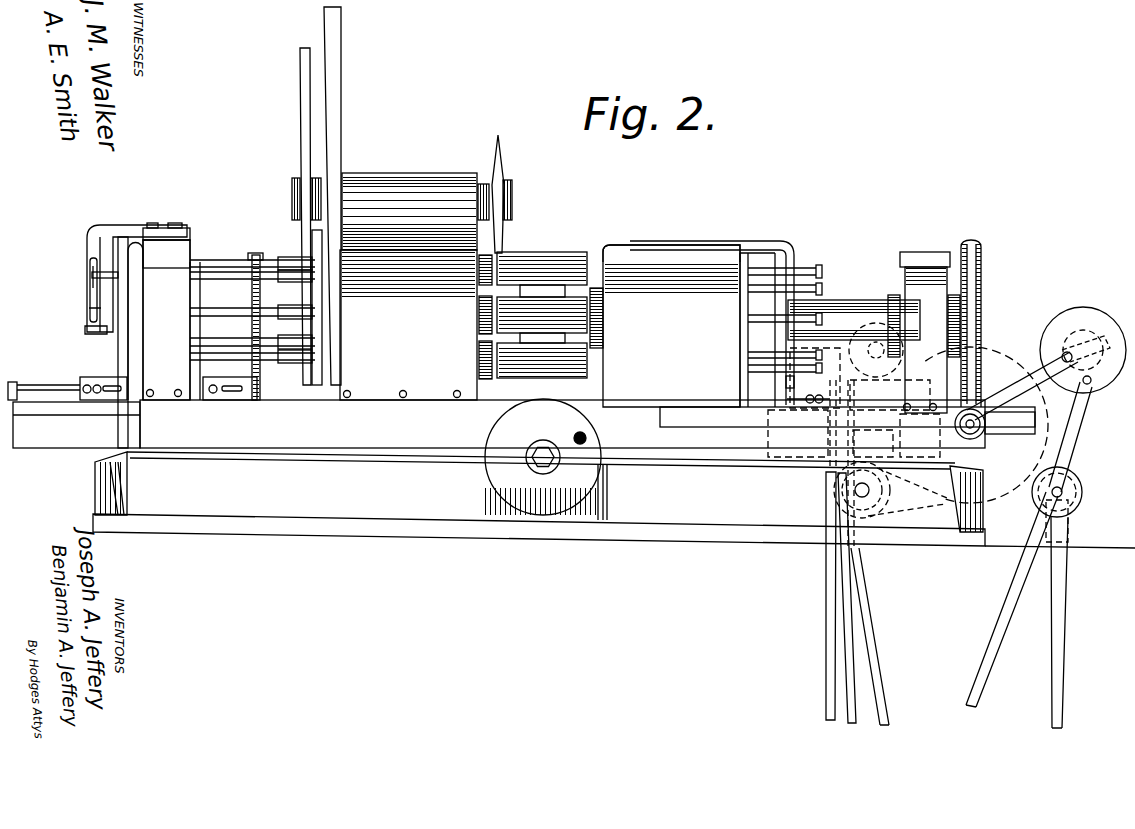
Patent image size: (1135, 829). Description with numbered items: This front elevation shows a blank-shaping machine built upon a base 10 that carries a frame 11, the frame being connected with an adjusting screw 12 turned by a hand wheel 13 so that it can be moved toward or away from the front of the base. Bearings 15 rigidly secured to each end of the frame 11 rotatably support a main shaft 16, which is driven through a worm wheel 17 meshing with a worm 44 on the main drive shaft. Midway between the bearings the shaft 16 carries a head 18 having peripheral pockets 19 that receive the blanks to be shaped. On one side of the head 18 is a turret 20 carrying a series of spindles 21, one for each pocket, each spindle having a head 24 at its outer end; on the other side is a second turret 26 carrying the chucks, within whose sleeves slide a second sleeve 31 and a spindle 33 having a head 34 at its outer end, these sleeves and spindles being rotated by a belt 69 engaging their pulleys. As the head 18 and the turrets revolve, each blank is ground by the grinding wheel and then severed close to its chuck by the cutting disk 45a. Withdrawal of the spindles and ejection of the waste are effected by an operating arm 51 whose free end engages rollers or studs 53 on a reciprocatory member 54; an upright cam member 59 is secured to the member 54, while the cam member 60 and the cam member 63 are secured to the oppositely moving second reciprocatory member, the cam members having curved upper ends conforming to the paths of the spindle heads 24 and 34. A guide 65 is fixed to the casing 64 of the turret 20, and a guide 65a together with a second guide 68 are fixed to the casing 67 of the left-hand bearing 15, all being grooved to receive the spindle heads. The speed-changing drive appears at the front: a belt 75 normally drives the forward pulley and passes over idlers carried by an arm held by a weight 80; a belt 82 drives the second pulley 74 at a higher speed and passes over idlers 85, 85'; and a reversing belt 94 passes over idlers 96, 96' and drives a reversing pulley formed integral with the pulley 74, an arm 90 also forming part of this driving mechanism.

The base 10 is at (340, 506).
The frame 11 is at (425, 440).
The adjusting screw 12 is at (538, 464).
The hand wheel 13 is at (560, 503).
The bearings 15 is at (925, 240).
The main shaft 16 is at (857, 312).
The worm wheel 17 is at (982, 260).
The head 18 is at (549, 262).
The peripheral pockets 19 is at (600, 306).
The turret 20 is at (689, 326).
The spindles 21 is at (748, 290).
The head 24 is at (823, 288).
The second turret 26 is at (426, 286).
The second sleeve 31 is at (300, 342).
The spindle 33 is at (224, 342).
The head 34 is at (93, 302).
The worm 44 is at (1000, 438).
The cutting disk 45a is at (502, 152).
The operating arm 51 is at (780, 432).
The rollers or studs 53 is at (847, 418).
The reciprocatory member 54 is at (30, 378).
The upright cam member 59 is at (118, 354).
The cam member 60 is at (785, 384).
The cam member 63 is at (250, 257).
The casing 64 is at (656, 262).
The guide 65 is at (755, 249).
The guide 65a is at (122, 248).
The casing 67 is at (172, 270).
The second guide 68 is at (88, 268).
The belt 69 is at (334, 147).
The second pulley 74 is at (1010, 356).
The belt 75 is at (850, 658).
The weight 80 is at (1091, 326).
The belt 82 is at (828, 675).
The idler 85 is at (1074, 500).
The idler 85' is at (879, 301).
The arm 90 is at (1058, 360).
The belt 94 is at (1066, 420).
The idler 96 is at (890, 496).
The idler 96' is at (1105, 391).